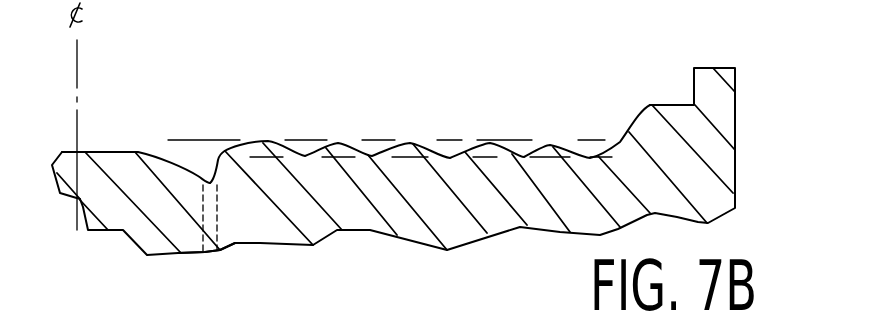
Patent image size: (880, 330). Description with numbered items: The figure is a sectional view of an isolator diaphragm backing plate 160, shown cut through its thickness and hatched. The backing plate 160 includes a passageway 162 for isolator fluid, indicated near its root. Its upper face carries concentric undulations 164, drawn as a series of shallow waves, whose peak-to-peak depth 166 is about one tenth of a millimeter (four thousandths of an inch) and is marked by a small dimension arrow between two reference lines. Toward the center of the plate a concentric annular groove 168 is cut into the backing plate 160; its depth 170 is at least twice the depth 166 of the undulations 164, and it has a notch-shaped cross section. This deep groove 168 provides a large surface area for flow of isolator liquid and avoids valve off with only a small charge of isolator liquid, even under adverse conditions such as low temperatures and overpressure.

The backing plate 160 is at (735, 185).
The passageway 162 is at (207, 252).
The concentric undulations 164 is at (523, 157).
The depth 166 is at (305, 157).
The concentric annular groove 168 is at (176, 162).
The depth 170 is at (209, 182).